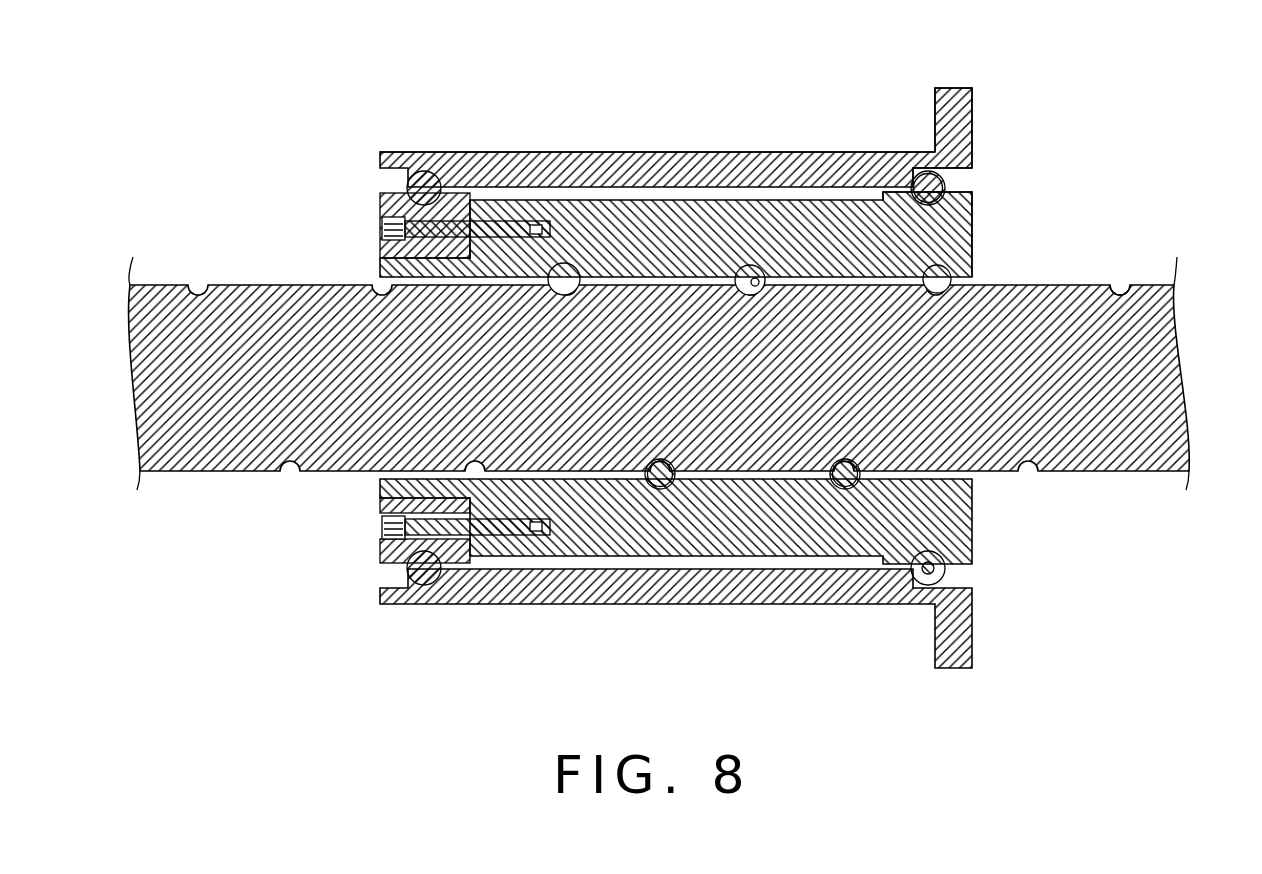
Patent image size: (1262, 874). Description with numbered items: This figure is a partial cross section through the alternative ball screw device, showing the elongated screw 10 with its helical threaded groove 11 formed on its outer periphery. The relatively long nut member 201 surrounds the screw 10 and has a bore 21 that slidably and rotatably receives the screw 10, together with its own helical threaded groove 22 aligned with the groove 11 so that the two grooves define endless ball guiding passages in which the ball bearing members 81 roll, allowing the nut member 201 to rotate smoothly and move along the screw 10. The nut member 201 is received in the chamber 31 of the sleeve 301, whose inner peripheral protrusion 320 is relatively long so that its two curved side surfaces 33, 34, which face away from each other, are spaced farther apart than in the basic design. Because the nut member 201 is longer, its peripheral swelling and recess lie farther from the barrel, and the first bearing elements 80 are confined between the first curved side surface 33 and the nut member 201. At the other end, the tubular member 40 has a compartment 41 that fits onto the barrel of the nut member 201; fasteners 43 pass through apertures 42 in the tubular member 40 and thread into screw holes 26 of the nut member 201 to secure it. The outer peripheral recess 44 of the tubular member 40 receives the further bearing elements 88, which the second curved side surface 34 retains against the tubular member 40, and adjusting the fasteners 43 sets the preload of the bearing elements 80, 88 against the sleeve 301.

The ball screw 10 is at (1157, 392).
The helical threaded groove 11 is at (1121, 283).
The nut member 201 is at (628, 215).
The bore 21 is at (975, 478).
The helical threaded groove 22 is at (975, 266).
The screw holes 26 is at (528, 237).
The sleeve 301 is at (728, 152).
The chamber 31 is at (972, 170).
The inner peripheral protrusion 320 is at (792, 185).
The first curved side surface 33 is at (918, 172).
The second curved side surface 34 is at (460, 152).
The tubular member 40 is at (380, 200).
The compartment 41 is at (380, 492).
The apertures 42 is at (380, 562).
The fasteners 43 is at (380, 528).
The outer peripheral recess 44 is at (380, 228).
The bearing elements 80 is at (945, 185).
The ball bearing members 81 is at (845, 489).
The bearing elements 88 is at (415, 583).